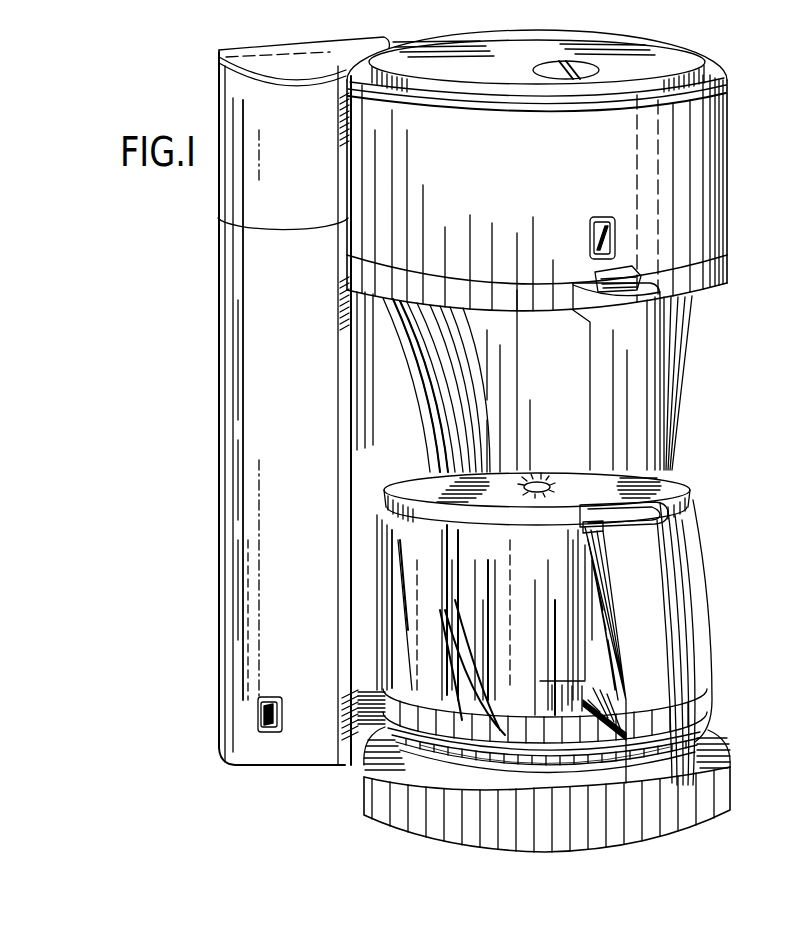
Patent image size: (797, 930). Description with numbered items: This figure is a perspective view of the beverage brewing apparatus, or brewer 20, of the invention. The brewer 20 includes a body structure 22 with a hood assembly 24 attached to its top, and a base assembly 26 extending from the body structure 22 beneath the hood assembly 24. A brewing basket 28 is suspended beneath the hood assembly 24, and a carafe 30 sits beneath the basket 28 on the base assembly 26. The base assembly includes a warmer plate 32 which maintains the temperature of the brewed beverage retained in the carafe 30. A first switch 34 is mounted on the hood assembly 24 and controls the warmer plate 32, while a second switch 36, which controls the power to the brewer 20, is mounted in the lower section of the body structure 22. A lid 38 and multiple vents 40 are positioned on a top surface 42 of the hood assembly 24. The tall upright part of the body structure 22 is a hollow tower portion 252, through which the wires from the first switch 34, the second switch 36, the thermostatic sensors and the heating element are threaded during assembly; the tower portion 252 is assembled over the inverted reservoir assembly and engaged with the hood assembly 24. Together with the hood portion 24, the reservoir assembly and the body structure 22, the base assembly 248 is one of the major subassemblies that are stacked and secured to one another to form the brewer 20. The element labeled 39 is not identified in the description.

The brewer 20 is at (217, 387).
The body structure 22 is at (259, 618).
The hood assembly 24 is at (234, 187).
The base assembly 26 is at (352, 813).
The brewing basket 28 is at (682, 348).
The carafe 30 is at (714, 591).
The warmer plate 32 is at (372, 786).
The first switch 34 is at (615, 242).
The second switch 36 is at (262, 715).
The lid 38 is at (693, 61).
The lid knob 39 is at (642, 53).
The vents 40 is at (386, 45).
The top surface 42 is at (218, 55).
The base assembly 248 is at (398, 808).
The hollow tower portion 252 is at (226, 492).